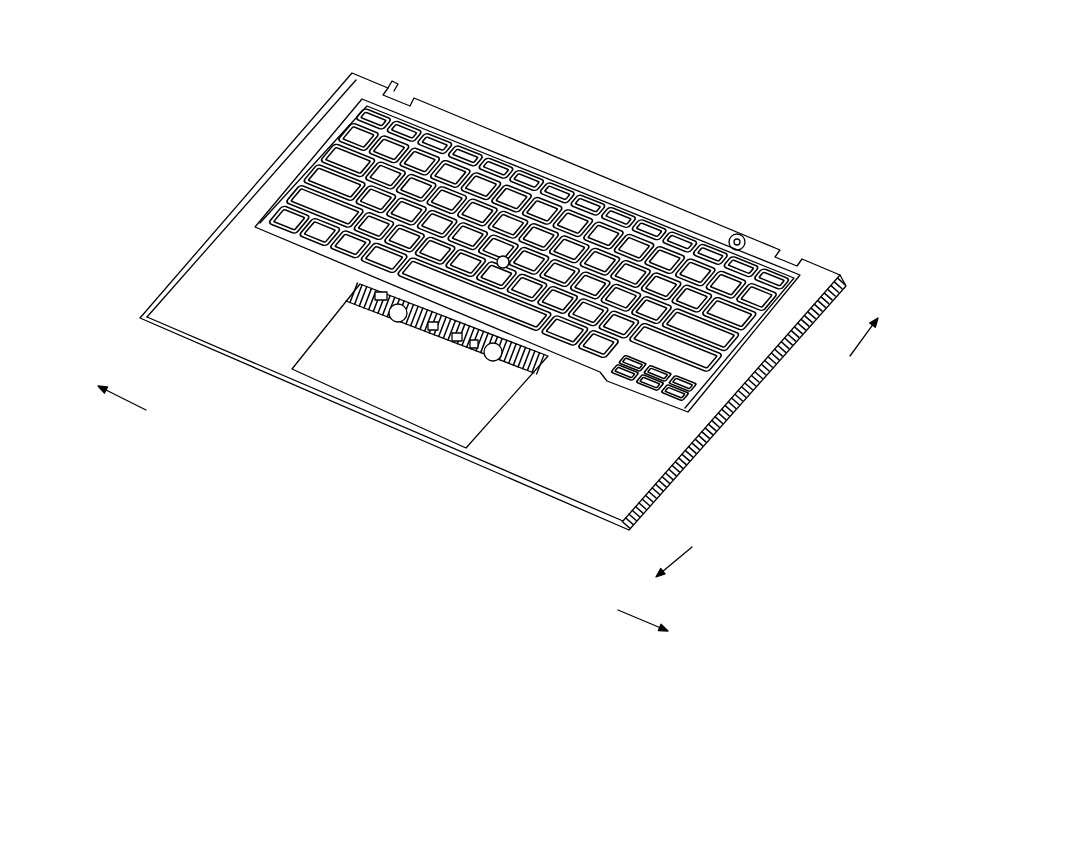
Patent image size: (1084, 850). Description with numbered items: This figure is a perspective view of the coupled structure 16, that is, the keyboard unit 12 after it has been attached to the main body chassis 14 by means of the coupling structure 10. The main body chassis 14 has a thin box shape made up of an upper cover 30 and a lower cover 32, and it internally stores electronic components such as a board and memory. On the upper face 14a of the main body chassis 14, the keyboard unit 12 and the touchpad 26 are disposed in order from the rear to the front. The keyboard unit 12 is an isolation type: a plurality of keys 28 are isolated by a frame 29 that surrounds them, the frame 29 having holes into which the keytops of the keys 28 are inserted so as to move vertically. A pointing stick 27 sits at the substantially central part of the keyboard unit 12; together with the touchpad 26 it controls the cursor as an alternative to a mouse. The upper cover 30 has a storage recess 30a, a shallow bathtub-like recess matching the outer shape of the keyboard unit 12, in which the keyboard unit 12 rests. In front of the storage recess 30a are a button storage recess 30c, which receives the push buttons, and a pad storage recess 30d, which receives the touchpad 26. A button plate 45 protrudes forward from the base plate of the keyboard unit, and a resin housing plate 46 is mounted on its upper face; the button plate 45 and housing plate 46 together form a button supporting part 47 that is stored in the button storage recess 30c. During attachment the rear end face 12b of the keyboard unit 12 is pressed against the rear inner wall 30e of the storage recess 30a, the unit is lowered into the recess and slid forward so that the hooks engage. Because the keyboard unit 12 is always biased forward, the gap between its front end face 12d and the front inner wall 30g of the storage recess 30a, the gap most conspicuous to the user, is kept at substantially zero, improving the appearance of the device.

The coupling structure 10 is at (510, 378).
The keyboard unit 12 is at (329, 170).
The rear end face 12b is at (480, 150).
The front end face 12d is at (348, 270).
The main body chassis 14 is at (241, 190).
The upper face 14a is at (213, 263).
The coupled structure 16 is at (268, 68).
The touchpad 26 is at (428, 398).
The pointing stick 27 is at (506, 256).
The keys 28 is at (432, 253).
The frame 29 is at (273, 237).
The upper cover 30 is at (645, 472).
The storage recess 30a is at (318, 258).
The button storage recess 30c is at (465, 400).
The pad storage recess 30d is at (383, 420).
The rear inner wall 30e is at (623, 277).
The front inner wall 30g is at (752, 392).
The lower cover 32 is at (707, 452).
The button plate 45 is at (487, 362).
The housing plate 46 is at (501, 372).
The button supporting part 47 is at (575, 603).